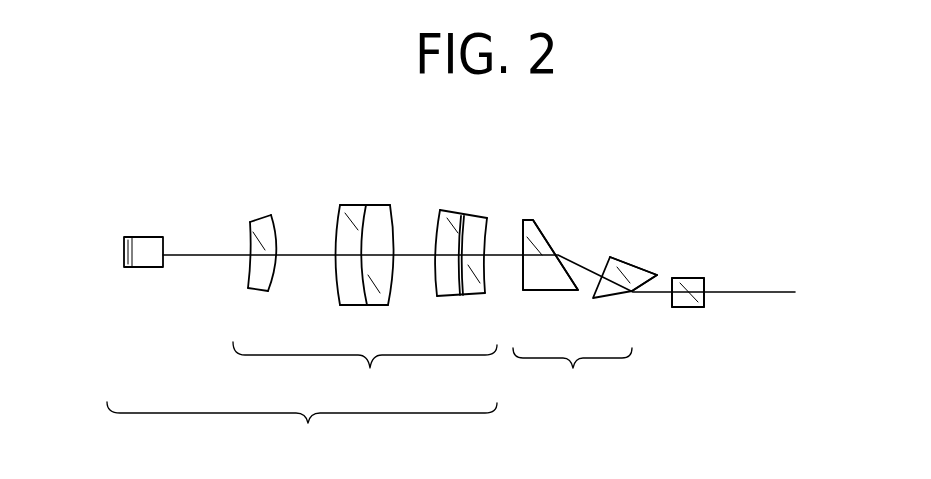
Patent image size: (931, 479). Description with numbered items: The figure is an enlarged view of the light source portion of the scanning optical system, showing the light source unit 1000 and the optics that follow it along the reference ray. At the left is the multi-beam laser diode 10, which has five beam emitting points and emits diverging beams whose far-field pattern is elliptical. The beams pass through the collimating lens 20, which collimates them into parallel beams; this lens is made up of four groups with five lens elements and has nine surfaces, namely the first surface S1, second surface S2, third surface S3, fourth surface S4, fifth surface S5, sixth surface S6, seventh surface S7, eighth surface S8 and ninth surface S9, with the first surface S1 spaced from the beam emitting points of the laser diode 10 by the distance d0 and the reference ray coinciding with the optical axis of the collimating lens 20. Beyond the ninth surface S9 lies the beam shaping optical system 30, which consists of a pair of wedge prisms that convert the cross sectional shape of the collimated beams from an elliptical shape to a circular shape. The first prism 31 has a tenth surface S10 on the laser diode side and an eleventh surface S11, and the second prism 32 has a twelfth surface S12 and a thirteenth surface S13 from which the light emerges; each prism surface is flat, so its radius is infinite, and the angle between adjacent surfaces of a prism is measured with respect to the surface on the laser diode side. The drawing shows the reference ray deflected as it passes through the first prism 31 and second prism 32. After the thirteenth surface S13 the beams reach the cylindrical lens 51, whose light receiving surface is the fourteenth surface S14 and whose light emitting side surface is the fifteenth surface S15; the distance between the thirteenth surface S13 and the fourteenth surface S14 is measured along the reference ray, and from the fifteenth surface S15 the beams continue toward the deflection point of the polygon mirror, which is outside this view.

The multi-beam laser diode 10 is at (143, 270).
The collimating lens 20 is at (365, 370).
The beam shaping optical system 30 is at (572, 376).
The first prism 31 is at (544, 268).
The second prism 32 is at (640, 273).
The cylindrical lens 51 is at (700, 294).
The light source unit 1000 is at (302, 430).
The first surface S1 is at (248, 232).
The second surface S2 is at (279, 214).
The third surface S3 is at (340, 214).
The fourth surface S4 is at (364, 212).
The fifth surface S5 is at (396, 210).
The sixth surface S6 is at (440, 238).
The seventh surface S7 is at (462, 216).
The eighth surface S8 is at (461, 273).
The ninth surface S9 is at (487, 229).
The tenth surface S10 is at (522, 266).
The eleventh surface S11 is at (543, 232).
The twelfth surface S12 is at (608, 257).
The thirteenth surface S13 is at (657, 277).
The fourteenth surface S14 is at (672, 295).
The fifteenth surface S15 is at (705, 286).